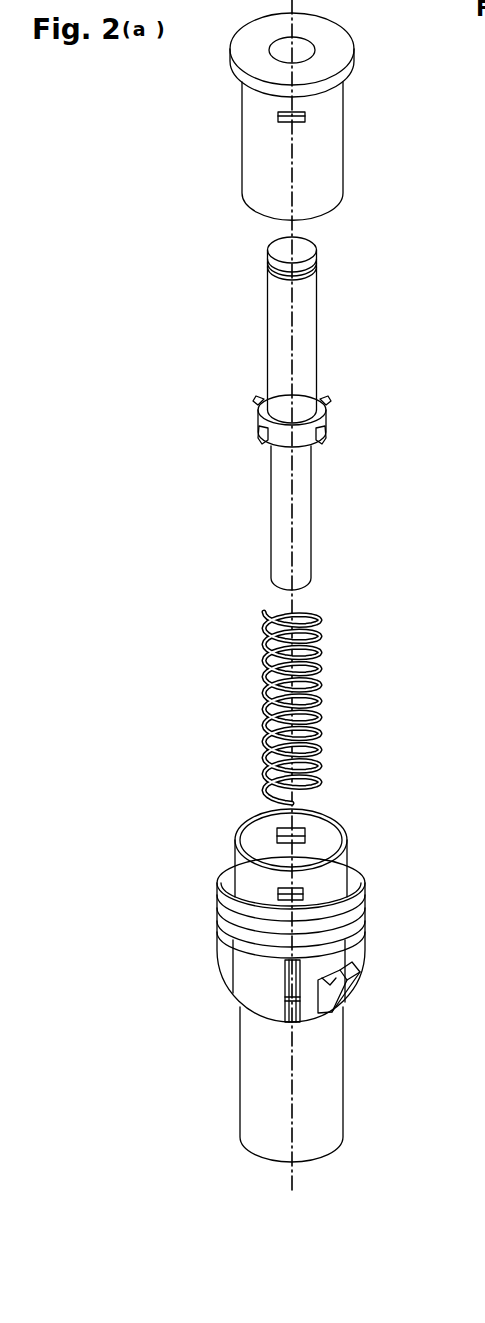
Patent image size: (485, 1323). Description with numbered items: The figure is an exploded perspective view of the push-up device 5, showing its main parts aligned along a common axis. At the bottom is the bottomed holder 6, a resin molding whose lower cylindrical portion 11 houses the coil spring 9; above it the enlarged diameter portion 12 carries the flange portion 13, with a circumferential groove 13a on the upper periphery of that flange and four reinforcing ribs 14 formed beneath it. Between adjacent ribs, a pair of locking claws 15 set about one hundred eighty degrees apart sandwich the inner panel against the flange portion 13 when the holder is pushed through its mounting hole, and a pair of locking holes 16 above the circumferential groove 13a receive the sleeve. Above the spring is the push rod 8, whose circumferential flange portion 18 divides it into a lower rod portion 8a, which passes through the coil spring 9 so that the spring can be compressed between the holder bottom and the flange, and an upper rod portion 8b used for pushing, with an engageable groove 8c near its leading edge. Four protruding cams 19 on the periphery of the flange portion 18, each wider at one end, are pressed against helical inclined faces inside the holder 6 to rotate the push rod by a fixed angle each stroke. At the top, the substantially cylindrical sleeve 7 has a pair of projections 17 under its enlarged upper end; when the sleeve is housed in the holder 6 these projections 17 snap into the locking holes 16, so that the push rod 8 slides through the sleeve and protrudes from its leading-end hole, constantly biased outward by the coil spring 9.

The push-up device 5 is at (406, 58).
The holder 6 is at (291, 977).
The sleeve 7 is at (331, 156).
The push rod 8 is at (309, 413).
The lower rod portion 8a is at (300, 523).
The upper rod portion 8b is at (305, 322).
The engageable groove 8c is at (268, 270).
The coil spring 9 is at (325, 716).
The cylindrical portion 11 is at (261, 1093).
The enlarged diameter portion 12 is at (256, 986).
The flange portion 13 is at (366, 912).
The circumferential groove 13a is at (364, 901).
The reinforcing ribs 14 is at (217, 949).
The locking claws 15 is at (354, 986).
The locking holes 16 is at (305, 832).
The projections 17 is at (306, 114).
The flange portion 18 is at (330, 418).
The cams 19 is at (261, 402).